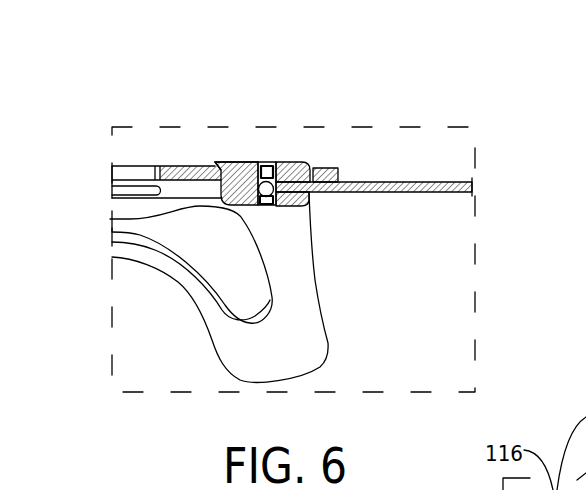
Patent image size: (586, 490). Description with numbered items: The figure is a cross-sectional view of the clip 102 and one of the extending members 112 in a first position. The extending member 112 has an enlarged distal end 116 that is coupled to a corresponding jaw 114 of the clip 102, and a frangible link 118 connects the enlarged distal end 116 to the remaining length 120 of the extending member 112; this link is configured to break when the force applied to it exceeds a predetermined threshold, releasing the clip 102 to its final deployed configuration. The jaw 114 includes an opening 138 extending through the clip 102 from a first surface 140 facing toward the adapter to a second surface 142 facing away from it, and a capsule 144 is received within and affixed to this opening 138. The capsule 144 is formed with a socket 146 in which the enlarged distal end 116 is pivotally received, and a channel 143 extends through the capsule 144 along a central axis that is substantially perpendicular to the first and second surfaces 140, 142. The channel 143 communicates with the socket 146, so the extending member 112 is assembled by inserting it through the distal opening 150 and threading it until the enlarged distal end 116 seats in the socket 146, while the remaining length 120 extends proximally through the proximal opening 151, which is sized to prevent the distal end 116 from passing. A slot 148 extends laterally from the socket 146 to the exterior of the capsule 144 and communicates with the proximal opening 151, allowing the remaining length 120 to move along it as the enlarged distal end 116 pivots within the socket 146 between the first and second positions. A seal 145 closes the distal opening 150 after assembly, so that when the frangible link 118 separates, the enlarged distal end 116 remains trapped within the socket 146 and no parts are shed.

The clip 102 is at (190, 118).
The extending member 112 is at (436, 211).
The jaw 114 is at (303, 277).
The enlarged distal end 116 is at (273, 190).
The frangible link 118 is at (333, 168).
The remaining length 120 is at (400, 186).
The opening 138 is at (215, 161).
The first surface 140 is at (140, 182).
The second surface 142 is at (118, 166).
The channel 143 is at (252, 167).
The capsule 144 is at (239, 161).
The seal 145 is at (267, 170).
The socket 146 is at (232, 207).
The slot 148 is at (292, 162).
The distal opening 150 is at (259, 163).
The proximal opening 151 is at (260, 207).